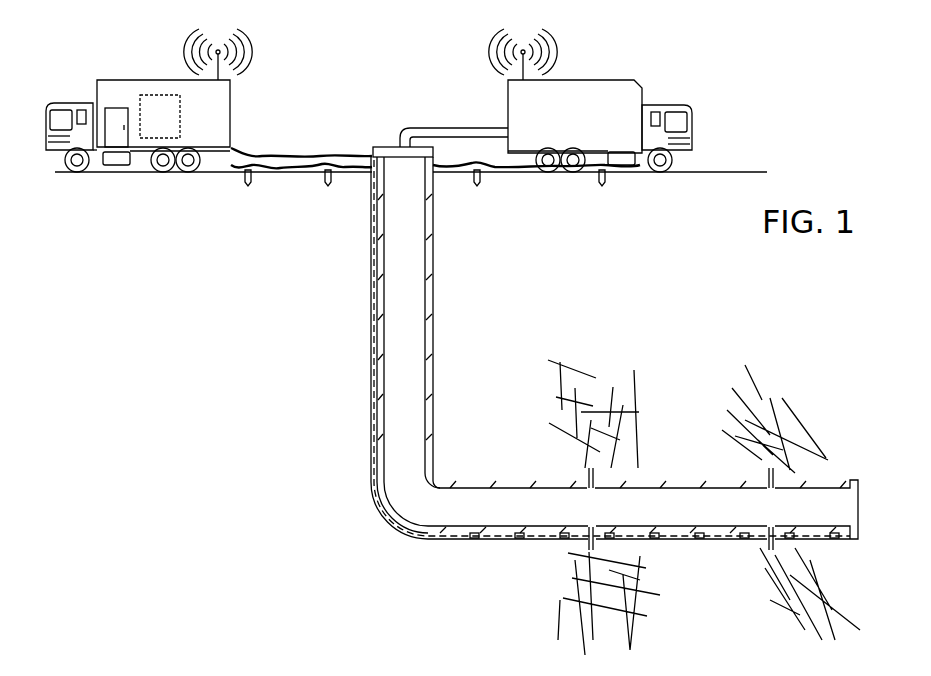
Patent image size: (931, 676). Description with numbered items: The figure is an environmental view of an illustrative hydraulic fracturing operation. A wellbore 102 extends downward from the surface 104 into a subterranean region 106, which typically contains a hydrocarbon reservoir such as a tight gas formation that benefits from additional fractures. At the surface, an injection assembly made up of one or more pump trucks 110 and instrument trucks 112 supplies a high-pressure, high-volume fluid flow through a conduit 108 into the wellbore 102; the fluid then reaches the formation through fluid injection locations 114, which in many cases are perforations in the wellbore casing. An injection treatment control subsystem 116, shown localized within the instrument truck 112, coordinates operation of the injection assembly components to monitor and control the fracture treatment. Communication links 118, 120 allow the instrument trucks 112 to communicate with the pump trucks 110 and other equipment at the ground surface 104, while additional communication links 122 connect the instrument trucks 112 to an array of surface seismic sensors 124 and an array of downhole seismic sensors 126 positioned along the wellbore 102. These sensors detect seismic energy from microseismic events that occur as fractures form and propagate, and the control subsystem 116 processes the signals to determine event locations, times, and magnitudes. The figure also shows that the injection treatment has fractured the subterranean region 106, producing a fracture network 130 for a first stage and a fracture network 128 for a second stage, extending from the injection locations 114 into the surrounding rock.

The wellbore 102 is at (428, 238).
The surface 104 is at (697, 172).
The subterranean region 106 is at (725, 620).
The conduit 108 is at (428, 128).
The pump truck 110 is at (647, 83).
The instrument truck 112 is at (97, 82).
The fluid injection location 114 is at (771, 490).
The injection treatment control subsystem 116 is at (155, 94).
The communication link 118 is at (236, 42).
The communication link 120 is at (542, 42).
The communication link 122 is at (236, 160).
The surface seismic sensor 124 is at (323, 187).
The downhole seismic sensor 126 is at (371, 370).
The fracture network 128 is at (640, 353).
The fracture network 130 is at (815, 353).